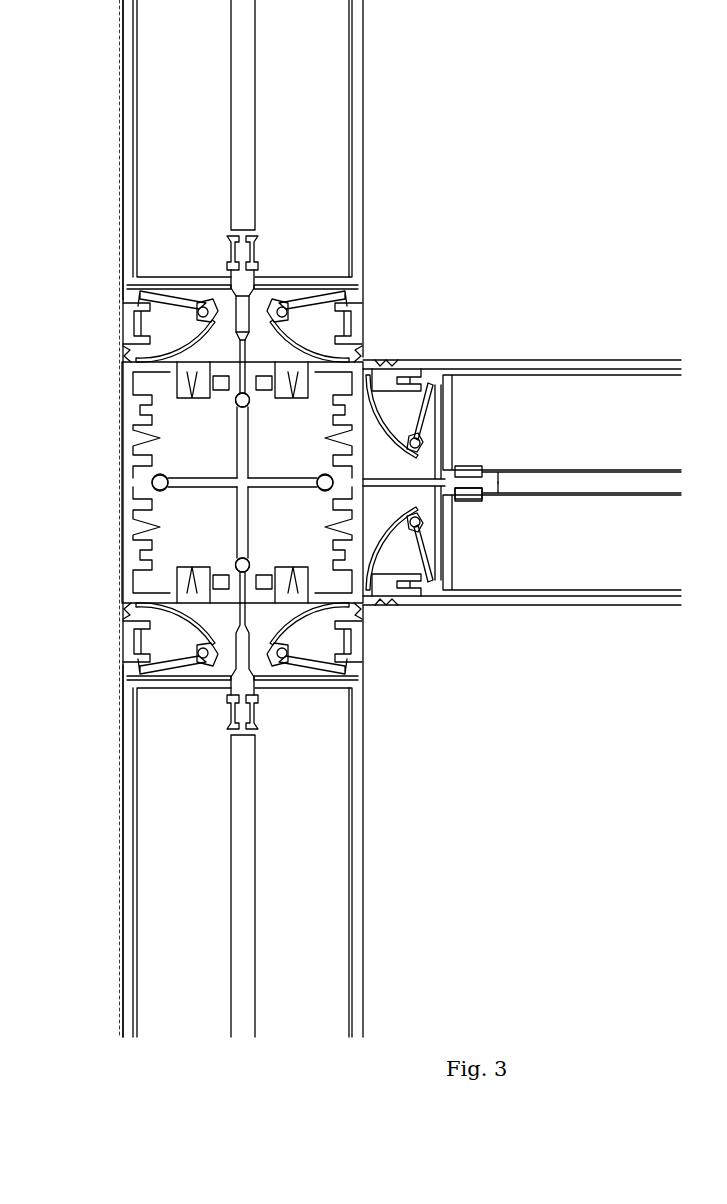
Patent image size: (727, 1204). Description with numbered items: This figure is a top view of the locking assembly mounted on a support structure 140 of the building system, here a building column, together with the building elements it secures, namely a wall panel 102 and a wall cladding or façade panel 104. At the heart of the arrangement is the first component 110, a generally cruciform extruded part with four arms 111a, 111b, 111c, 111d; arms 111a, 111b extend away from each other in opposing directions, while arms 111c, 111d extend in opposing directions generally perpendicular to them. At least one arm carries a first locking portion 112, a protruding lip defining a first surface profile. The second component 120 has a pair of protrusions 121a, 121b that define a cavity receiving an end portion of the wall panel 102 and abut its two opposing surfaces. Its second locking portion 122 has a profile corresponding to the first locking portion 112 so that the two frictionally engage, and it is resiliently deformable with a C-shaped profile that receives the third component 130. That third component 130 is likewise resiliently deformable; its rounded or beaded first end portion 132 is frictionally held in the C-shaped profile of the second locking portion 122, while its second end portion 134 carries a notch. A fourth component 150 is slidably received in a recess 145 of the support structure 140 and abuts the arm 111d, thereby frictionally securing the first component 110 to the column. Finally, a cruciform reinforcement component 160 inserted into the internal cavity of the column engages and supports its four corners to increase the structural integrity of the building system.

The wall panel 102 is at (150, 212).
The wall cladding or façade panel 104 is at (125, 180).
The first component 110 is at (250, 297).
The arm 111a is at (205, 293).
The arm 111b is at (277, 292).
The arm 111c is at (243, 230).
The arm 111d is at (256, 372).
The first locking portion 112 is at (157, 292).
The second component 120 is at (130, 287).
The protrusion 121a is at (131, 118).
The protrusion 121b is at (228, 243).
The second locking portion 122 is at (120, 310).
The third component 130 is at (186, 343).
The first end portion 132 is at (197, 314).
The second end portion 134 is at (120, 347).
The support structure 140 is at (120, 600).
The recess 145 is at (236, 380).
The fourth component 150 is at (225, 367).
The reinforcement component 160 is at (263, 480).